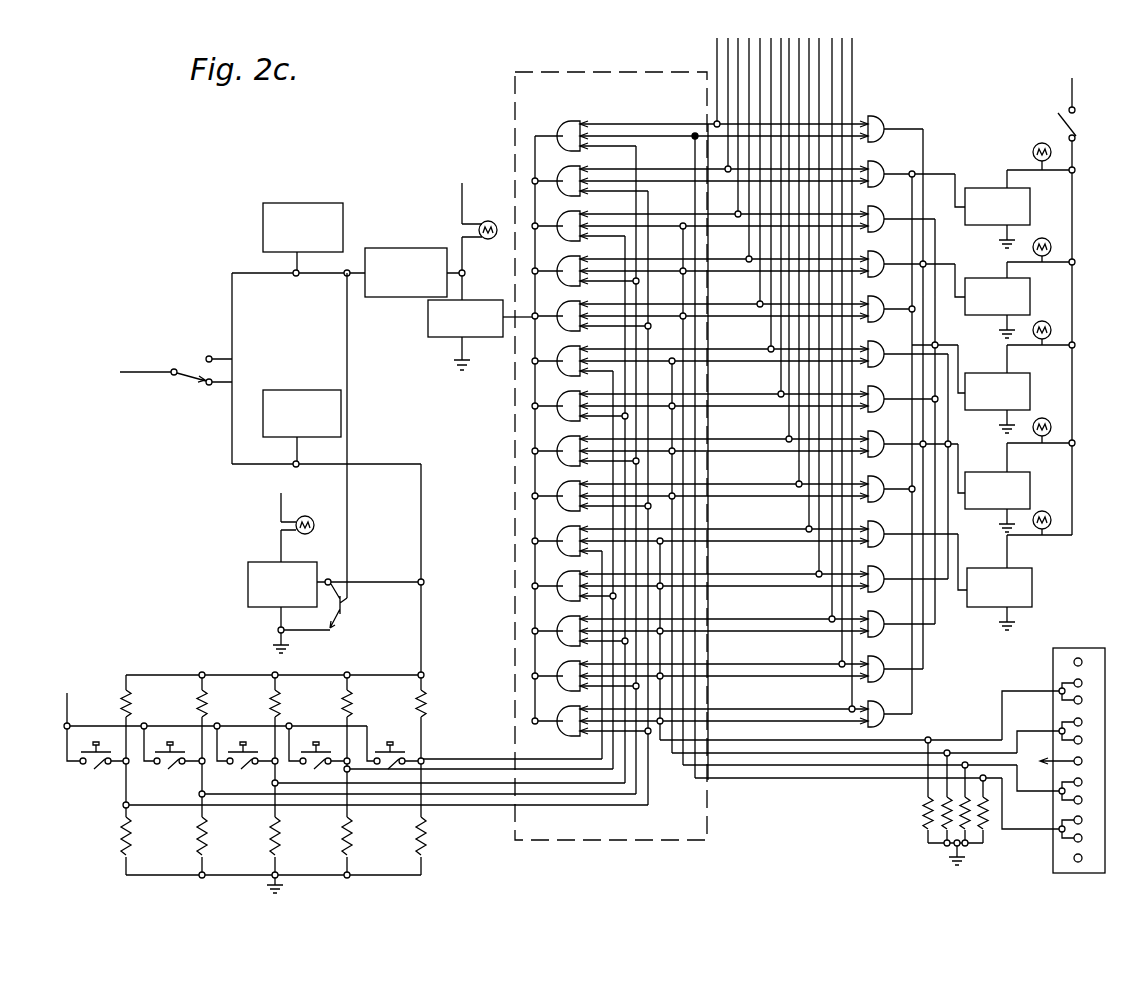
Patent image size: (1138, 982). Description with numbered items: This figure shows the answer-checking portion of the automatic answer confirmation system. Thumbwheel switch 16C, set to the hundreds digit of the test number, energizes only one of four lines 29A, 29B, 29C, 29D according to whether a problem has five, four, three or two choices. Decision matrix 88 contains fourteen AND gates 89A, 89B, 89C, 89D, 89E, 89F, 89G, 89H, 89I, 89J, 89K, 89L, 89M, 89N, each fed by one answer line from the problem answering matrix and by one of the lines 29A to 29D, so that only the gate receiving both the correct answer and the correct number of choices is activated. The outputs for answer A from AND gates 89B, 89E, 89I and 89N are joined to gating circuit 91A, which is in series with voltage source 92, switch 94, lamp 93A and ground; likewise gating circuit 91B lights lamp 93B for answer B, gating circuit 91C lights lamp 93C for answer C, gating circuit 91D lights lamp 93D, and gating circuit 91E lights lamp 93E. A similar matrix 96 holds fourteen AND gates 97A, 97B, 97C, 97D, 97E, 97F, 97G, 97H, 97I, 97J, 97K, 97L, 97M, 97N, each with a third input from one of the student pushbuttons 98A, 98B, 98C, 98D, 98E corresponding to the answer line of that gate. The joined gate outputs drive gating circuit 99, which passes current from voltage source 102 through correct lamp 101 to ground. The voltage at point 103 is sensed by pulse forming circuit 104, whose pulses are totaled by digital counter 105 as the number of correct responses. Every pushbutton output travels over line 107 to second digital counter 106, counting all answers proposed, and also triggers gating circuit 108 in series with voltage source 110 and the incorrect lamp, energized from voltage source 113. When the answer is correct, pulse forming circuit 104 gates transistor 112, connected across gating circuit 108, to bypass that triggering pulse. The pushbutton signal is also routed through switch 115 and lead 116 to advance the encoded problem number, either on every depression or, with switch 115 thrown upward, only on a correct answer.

The thumbwheel switch 16C is at (1053, 665).
The line 29A is at (947, 738).
The line 29B is at (907, 752).
The line 29C is at (882, 766).
The line 29D is at (842, 779).
The decision matrix 88 is at (917, 72).
The AND gate 89A is at (886, 119).
The AND gate 89B is at (886, 164).
The AND gate 89C is at (886, 209).
The AND gate 89D is at (886, 254).
The AND gate 89E is at (886, 299).
The AND gate 89F is at (886, 344).
The AND gate 89G is at (886, 389).
The AND gate 89H is at (886, 434).
The AND gate 89I is at (886, 479).
The AND gate 89J is at (886, 524).
The AND gate 89K is at (886, 569).
The AND gate 89L is at (886, 614).
The AND gate 89M is at (886, 659).
The AND gate 89N is at (886, 704).
The gating circuit 91A is at (984, 188).
The gating circuit 91B is at (984, 278).
The gating circuit 91C is at (984, 373).
The gating circuit 91D is at (985, 472).
The gating circuit 91E is at (986, 568).
The voltage source 92 is at (1108, 71).
The lamp 93A is at (1039, 143).
The lamp 93B is at (1045, 238).
The lamp 93C is at (1046, 321).
The lamp 93D is at (1046, 418).
The lamp 93E is at (1052, 505).
The switch 94 is at (1076, 127).
The matrix 96 is at (556, 93).
The AND gate 97A is at (565, 123).
The AND gate 97B is at (565, 168).
The AND gate 97C is at (565, 213).
The AND gate 97D is at (565, 258).
The AND gate 97E is at (565, 303).
The AND gate 97F is at (565, 348).
The AND gate 97G is at (565, 393).
The AND gate 97H is at (565, 438).
The AND gate 97I is at (565, 483).
The AND gate 97J is at (565, 528).
The AND gate 97K is at (565, 573).
The AND gate 97L is at (565, 618).
The AND gate 97M is at (565, 663).
The AND gate 97N is at (565, 708).
The student pushbutton 98A is at (99, 766).
The student pushbutton 98B is at (175, 766).
The student pushbutton 98C is at (249, 766).
The student pushbutton 98D is at (322, 766).
The student pushbutton 98E is at (396, 744).
The gating circuit 99 is at (428, 327).
The lamp 101 is at (488, 222).
The voltage source 102 is at (478, 178).
The point 103 is at (466, 272).
The pulse forming circuit 104 is at (400, 248).
The digital counter 105 is at (297, 203).
The second digital counter 106 is at (297, 390).
The line 107 is at (422, 540).
The gating circuit 108 is at (248, 573).
The voltage source 110 is at (247, 490).
The transistor 112 is at (350, 612).
The voltage source 113 is at (66, 693).
The switch 115 is at (189, 380).
The lead 116 is at (136, 370).